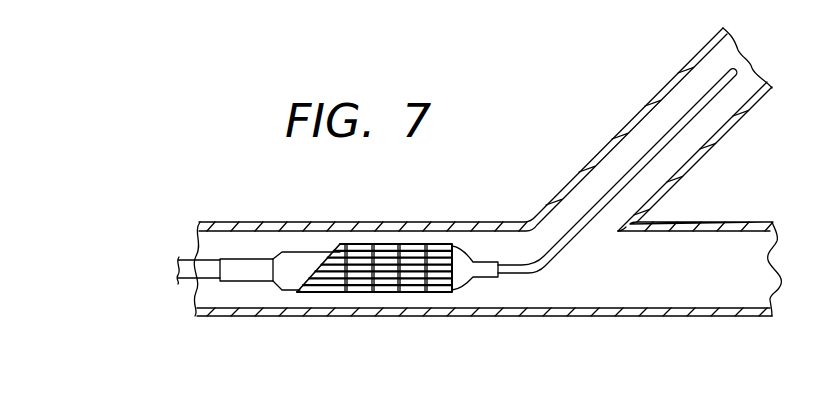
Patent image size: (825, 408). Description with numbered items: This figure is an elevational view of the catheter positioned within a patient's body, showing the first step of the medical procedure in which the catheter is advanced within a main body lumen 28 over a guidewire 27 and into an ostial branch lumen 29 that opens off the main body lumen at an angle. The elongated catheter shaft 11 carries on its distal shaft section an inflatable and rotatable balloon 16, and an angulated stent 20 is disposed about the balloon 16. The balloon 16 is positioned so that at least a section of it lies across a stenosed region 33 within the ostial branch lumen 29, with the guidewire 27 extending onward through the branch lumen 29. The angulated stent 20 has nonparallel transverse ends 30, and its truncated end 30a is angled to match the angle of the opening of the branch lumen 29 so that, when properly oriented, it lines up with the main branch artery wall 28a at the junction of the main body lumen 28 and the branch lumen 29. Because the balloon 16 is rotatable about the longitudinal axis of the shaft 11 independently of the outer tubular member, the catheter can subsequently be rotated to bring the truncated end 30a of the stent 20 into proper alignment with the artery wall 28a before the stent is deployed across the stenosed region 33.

The catheter shaft 11 is at (184, 283).
The inflatable and rotatable balloon 16 is at (289, 283).
The angulated stent 20 is at (389, 292).
The guidewire 27 is at (710, 100).
The main body lumen 28 is at (553, 317).
The main branch artery wall 28a is at (529, 225).
The ostial branch lumen 29 is at (656, 129).
The nonparallel transverse ends 30 is at (313, 273).
The truncated end 30a is at (320, 268).
The stenosed region 33 is at (697, 88).